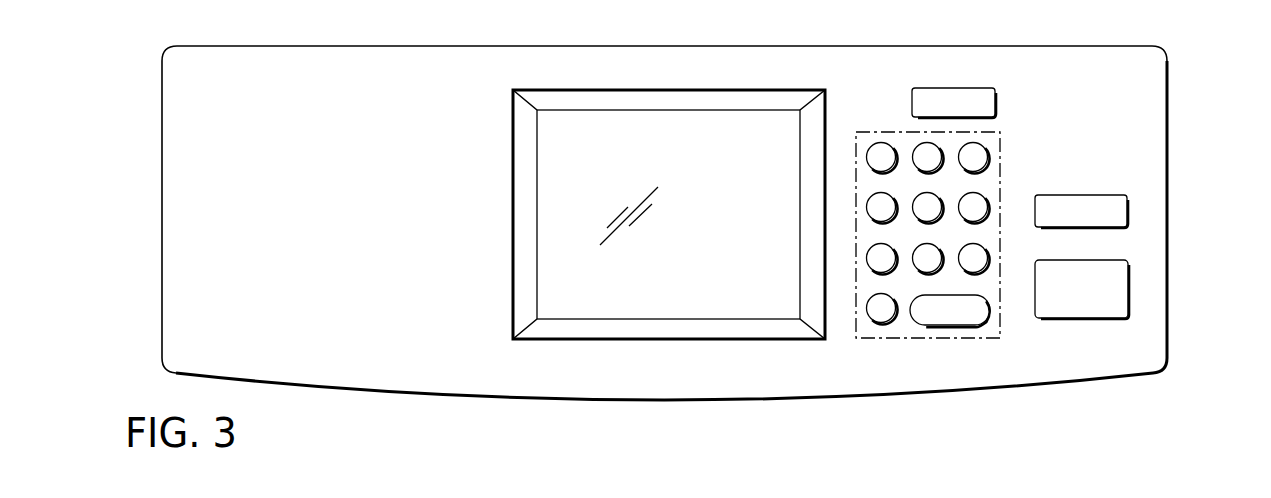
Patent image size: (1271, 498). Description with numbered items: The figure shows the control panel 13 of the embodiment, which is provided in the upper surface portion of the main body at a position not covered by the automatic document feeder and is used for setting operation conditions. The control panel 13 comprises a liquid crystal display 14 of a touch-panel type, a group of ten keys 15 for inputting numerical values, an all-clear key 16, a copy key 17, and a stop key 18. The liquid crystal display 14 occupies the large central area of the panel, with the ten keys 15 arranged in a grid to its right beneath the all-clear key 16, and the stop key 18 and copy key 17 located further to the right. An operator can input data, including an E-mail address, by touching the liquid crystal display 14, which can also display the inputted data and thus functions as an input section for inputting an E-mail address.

The control panel 13 is at (739, 46).
The liquid crystal display 14 is at (577, 123).
The ten keys 15 is at (880, 132).
The all-clear key 16 is at (957, 88).
The copy key 17 is at (1128, 288).
The stop key 18 is at (1128, 210).